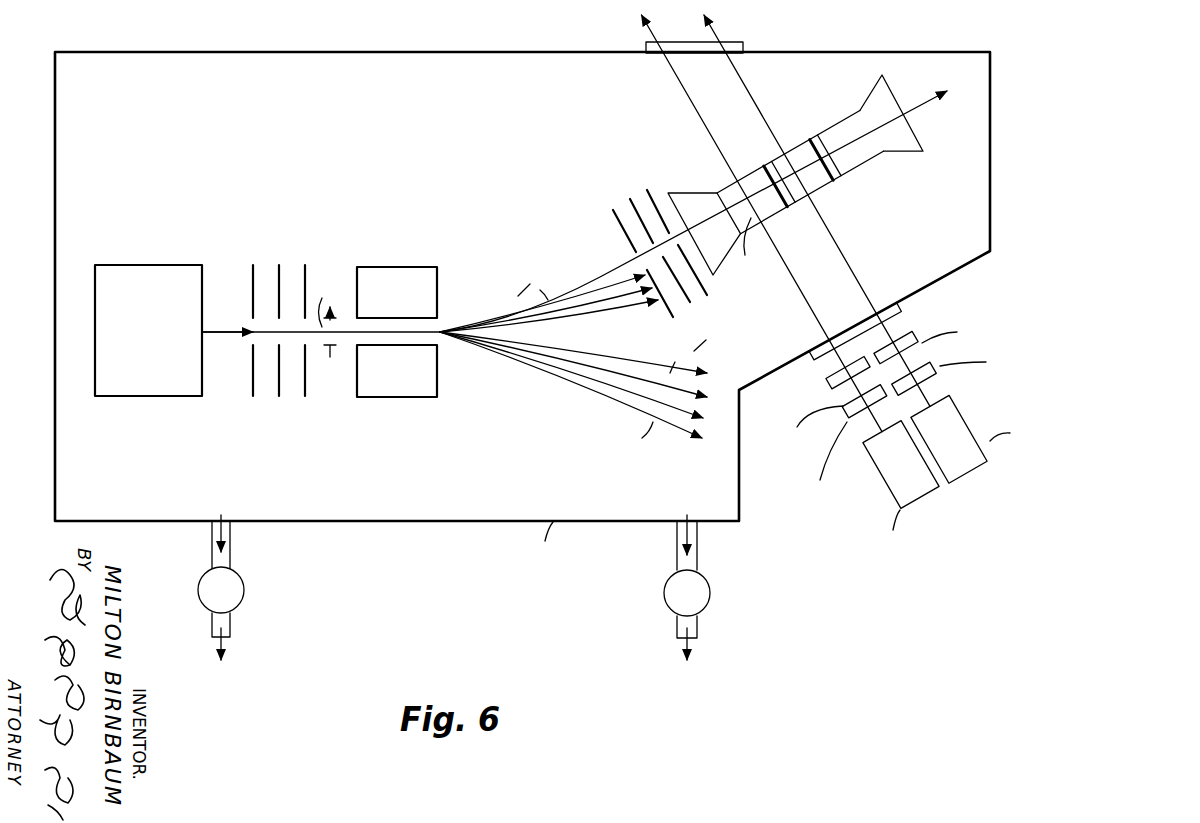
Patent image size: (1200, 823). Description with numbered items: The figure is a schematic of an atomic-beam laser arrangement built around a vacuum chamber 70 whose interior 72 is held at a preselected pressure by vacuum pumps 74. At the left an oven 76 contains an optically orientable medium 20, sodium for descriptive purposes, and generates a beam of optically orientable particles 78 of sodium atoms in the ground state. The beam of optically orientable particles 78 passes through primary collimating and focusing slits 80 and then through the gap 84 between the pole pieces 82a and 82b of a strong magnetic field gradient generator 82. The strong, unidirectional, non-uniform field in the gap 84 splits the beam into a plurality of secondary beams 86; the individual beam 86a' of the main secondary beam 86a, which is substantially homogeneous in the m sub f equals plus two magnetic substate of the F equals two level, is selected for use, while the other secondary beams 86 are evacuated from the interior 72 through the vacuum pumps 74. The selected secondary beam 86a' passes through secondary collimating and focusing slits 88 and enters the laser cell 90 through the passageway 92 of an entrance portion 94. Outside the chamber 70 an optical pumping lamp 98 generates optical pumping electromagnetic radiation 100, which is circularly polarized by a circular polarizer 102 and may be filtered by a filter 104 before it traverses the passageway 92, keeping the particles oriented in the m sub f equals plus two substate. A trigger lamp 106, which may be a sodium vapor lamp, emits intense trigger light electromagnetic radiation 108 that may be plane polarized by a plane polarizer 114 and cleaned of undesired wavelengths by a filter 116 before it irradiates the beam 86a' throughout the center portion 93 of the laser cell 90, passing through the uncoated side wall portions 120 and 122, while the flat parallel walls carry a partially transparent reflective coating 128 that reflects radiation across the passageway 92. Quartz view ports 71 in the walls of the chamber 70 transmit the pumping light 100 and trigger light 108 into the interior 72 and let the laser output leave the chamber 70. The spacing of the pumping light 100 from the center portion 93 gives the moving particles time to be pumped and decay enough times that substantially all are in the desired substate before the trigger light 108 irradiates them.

The optically orientable medium 20 is at (158, 339).
The vacuum chamber 70 is at (606, 524).
The quartz view ports 71 is at (743, 48).
The interior 72 is at (431, 477).
The vacuum pumps 74 is at (232, 578).
The oven aperture 76 is at (160, 396).
The beam of optically orientable particles 78 is at (213, 332).
The primary collimating and focusing slits 80 is at (255, 264).
The magnetic field gradient generator 82 is at (344, 282).
The pole piece 82a is at (391, 267).
The pole piece 82b is at (378, 397).
The gap 84 is at (329, 319).
The secondary beams 86 is at (596, 313).
The main secondary beam 86a is at (549, 306).
The selected secondary beam 86a' is at (693, 211).
The secondary collimating and focusing slits 88 is at (647, 190).
The laser cell 90 is at (872, 160).
The passageway 92 is at (715, 240).
The center portion 93 is at (790, 153).
The entrance portion 94 is at (758, 220).
The optical pumping lamp 98 is at (937, 497).
The optical pumping electromagnetic radiation 100 is at (813, 316).
The circular polarizer 102 is at (850, 420).
The filter 104 is at (828, 381).
The trigger lamp 106 is at (988, 452).
The trigger light electromagnetic radiation 108 is at (928, 390).
The plane polarizer 114 is at (920, 339).
The filter 116 is at (937, 375).
The side wall portion 120 is at (800, 205).
The side wall portion 122 is at (774, 162).
The reflective coating 128 is at (826, 178).